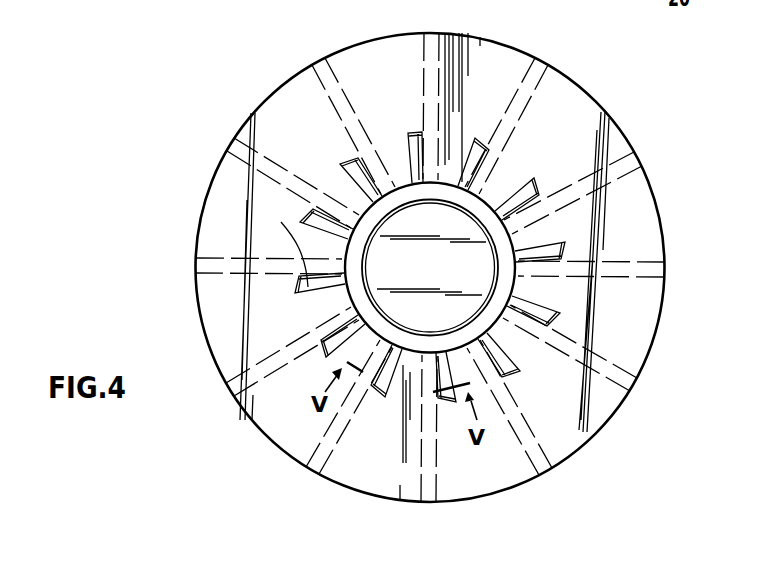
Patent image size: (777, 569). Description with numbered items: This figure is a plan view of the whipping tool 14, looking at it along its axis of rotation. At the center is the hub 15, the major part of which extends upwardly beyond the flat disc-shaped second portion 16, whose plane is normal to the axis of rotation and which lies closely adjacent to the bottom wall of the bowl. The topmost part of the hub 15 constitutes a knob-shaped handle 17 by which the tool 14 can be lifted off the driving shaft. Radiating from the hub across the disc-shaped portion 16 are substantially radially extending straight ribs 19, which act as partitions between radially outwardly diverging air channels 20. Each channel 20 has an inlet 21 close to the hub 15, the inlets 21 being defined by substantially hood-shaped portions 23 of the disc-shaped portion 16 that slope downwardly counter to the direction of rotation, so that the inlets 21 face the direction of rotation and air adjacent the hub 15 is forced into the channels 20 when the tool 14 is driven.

The whipping tool 14 is at (195, 309).
The hub 15 is at (500, 251).
The disc-shaped second portion 16 is at (570, 123).
The knob-shaped handle 17 is at (494, 283).
The ribs 19 is at (327, 88).
The air channels 20 is at (382, 64).
The inlets 21 is at (372, 172).
The hood-shaped portions 23 is at (306, 216).